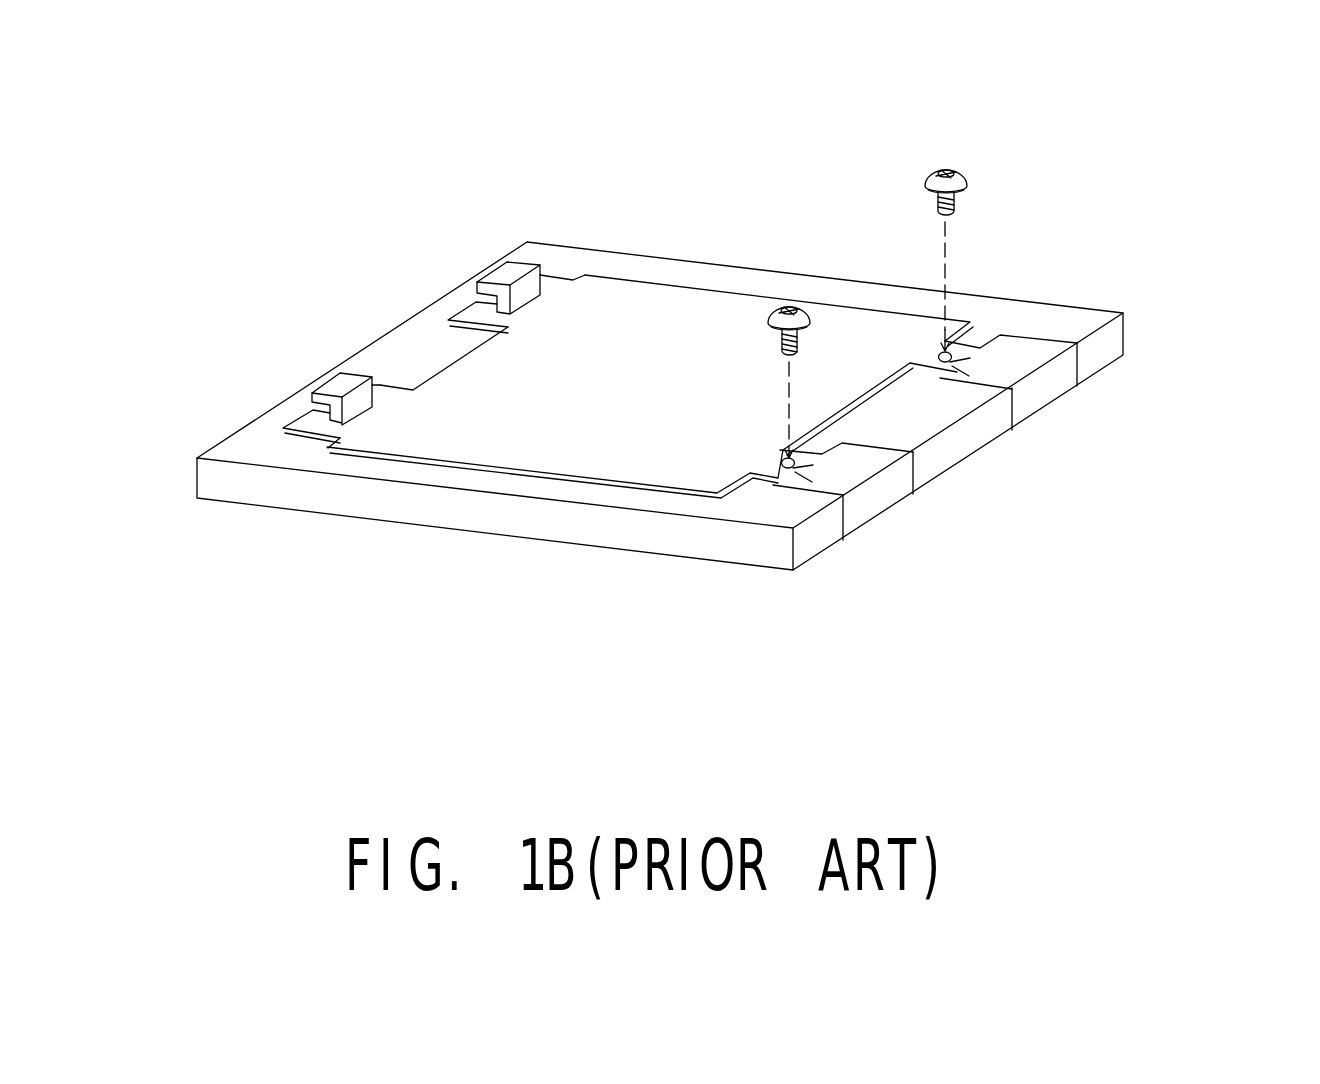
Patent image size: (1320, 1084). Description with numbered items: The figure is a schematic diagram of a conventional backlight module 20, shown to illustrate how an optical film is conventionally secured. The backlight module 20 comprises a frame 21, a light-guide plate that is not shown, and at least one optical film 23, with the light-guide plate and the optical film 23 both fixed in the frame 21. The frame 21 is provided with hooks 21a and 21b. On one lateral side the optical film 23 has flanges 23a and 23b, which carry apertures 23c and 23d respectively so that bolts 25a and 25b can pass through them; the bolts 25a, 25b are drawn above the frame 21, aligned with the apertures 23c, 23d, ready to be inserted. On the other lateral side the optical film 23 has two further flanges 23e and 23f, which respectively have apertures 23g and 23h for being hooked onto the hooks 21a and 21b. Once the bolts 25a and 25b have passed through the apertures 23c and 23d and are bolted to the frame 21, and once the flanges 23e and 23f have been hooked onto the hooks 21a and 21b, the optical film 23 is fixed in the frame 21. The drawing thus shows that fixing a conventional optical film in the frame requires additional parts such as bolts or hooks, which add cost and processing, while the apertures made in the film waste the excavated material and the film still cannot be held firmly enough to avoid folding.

The backlight module 20 is at (1253, 206).
The frame 21 is at (1103, 352).
The hook 21a is at (545, 282).
The hook 21b is at (358, 400).
The optical film 23 is at (632, 355).
The flange 23a is at (978, 355).
The flange 23b is at (805, 463).
The aperture 23c is at (950, 364).
The aperture 23d is at (790, 474).
The flange 23e is at (468, 313).
The flange 23f is at (301, 434).
The aperture 23g is at (493, 300).
The aperture 23h is at (333, 395).
The bolt 25a is at (963, 198).
The bolt 25b is at (806, 336).